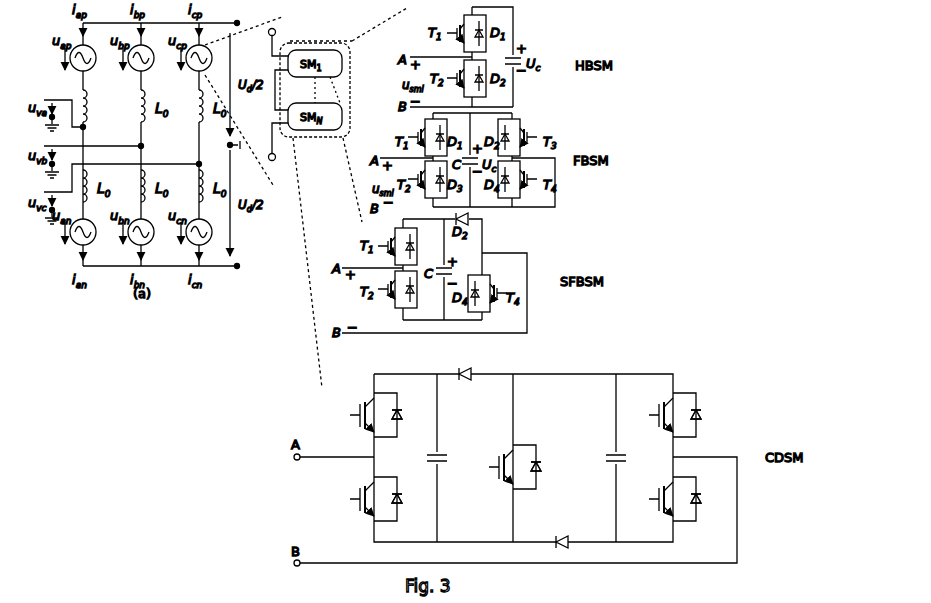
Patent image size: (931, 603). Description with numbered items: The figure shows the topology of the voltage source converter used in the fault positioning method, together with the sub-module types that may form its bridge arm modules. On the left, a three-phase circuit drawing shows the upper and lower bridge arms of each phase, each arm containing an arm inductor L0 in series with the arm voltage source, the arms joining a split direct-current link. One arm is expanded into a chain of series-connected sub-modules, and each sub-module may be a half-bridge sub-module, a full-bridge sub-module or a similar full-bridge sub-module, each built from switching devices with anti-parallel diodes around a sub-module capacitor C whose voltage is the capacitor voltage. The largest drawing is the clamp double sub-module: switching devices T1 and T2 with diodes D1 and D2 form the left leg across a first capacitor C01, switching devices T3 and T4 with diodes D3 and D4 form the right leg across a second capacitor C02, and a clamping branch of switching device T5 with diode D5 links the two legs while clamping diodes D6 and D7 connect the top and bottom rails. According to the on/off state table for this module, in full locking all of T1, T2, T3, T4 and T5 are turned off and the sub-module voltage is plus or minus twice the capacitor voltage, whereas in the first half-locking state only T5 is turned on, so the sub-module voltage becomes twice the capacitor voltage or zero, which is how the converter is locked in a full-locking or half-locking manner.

The arm inductor L0 is at (97, 106).
The submodule capacitor C is at (508, 63).
The switching device T1 is at (368, 415).
The switching device T2 is at (368, 499).
The switching device T3 is at (668, 415).
The switching device T4 is at (668, 499).
The switching device T5 is at (508, 467).
The diode D1 is at (406, 409).
The diode D2 is at (406, 492).
The diode D3 is at (705, 407).
The diode D4 is at (705, 491).
The diode D5 is at (544, 461).
The diode D6 is at (472, 383).
The diode D7 is at (565, 537).
The capacitor C01 is at (447, 451).
The capacitor C02 is at (626, 449).